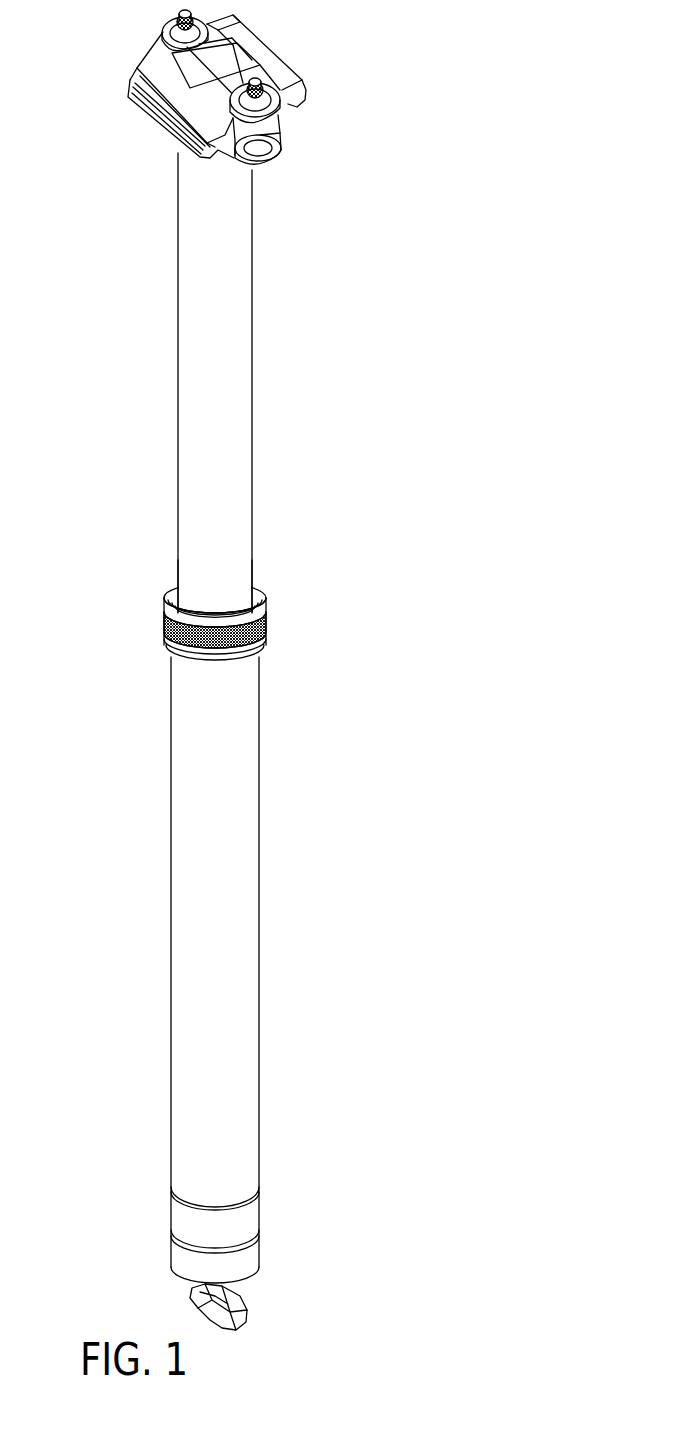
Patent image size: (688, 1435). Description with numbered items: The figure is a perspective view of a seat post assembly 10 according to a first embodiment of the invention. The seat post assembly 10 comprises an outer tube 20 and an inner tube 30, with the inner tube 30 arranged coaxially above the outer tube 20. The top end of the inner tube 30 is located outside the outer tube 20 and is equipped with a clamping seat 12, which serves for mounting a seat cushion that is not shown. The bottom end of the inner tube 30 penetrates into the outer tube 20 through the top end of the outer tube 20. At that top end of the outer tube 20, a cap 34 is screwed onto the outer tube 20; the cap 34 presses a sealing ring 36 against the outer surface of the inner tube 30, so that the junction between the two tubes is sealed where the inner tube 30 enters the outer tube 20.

The seat post assembly 10 is at (405, 72).
The clamping seat 12 is at (143, 130).
The outer tube 20 is at (250, 935).
The inner tube 30 is at (235, 407).
The cap 34 is at (265, 623).
The sealing ring 36 is at (258, 591).